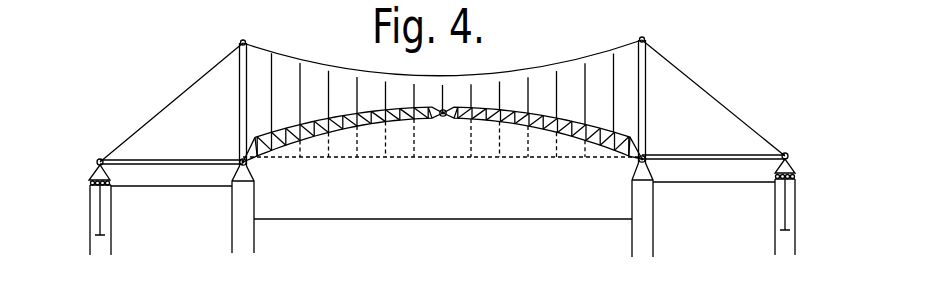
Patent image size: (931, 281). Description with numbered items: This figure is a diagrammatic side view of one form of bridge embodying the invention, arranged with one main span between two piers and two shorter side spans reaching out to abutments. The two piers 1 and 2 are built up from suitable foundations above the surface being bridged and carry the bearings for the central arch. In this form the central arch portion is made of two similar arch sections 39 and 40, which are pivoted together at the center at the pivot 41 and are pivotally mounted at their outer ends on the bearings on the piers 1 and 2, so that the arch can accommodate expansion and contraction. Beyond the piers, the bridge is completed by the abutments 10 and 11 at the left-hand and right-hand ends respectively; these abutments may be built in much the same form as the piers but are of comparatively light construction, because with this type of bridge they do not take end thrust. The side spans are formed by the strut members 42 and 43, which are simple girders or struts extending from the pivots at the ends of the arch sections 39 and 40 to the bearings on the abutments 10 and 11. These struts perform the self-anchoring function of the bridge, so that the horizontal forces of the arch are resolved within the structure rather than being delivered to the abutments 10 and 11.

The pier 1 is at (247, 208).
The pier 2 is at (644, 222).
The abutment 10 is at (91, 216).
The abutment 11 is at (792, 218).
The arch section 39 is at (376, 123).
The arch section 40 is at (540, 125).
The center pivot 41 is at (443, 118).
The strut member 42 is at (192, 163).
The strut member 43 is at (737, 158).